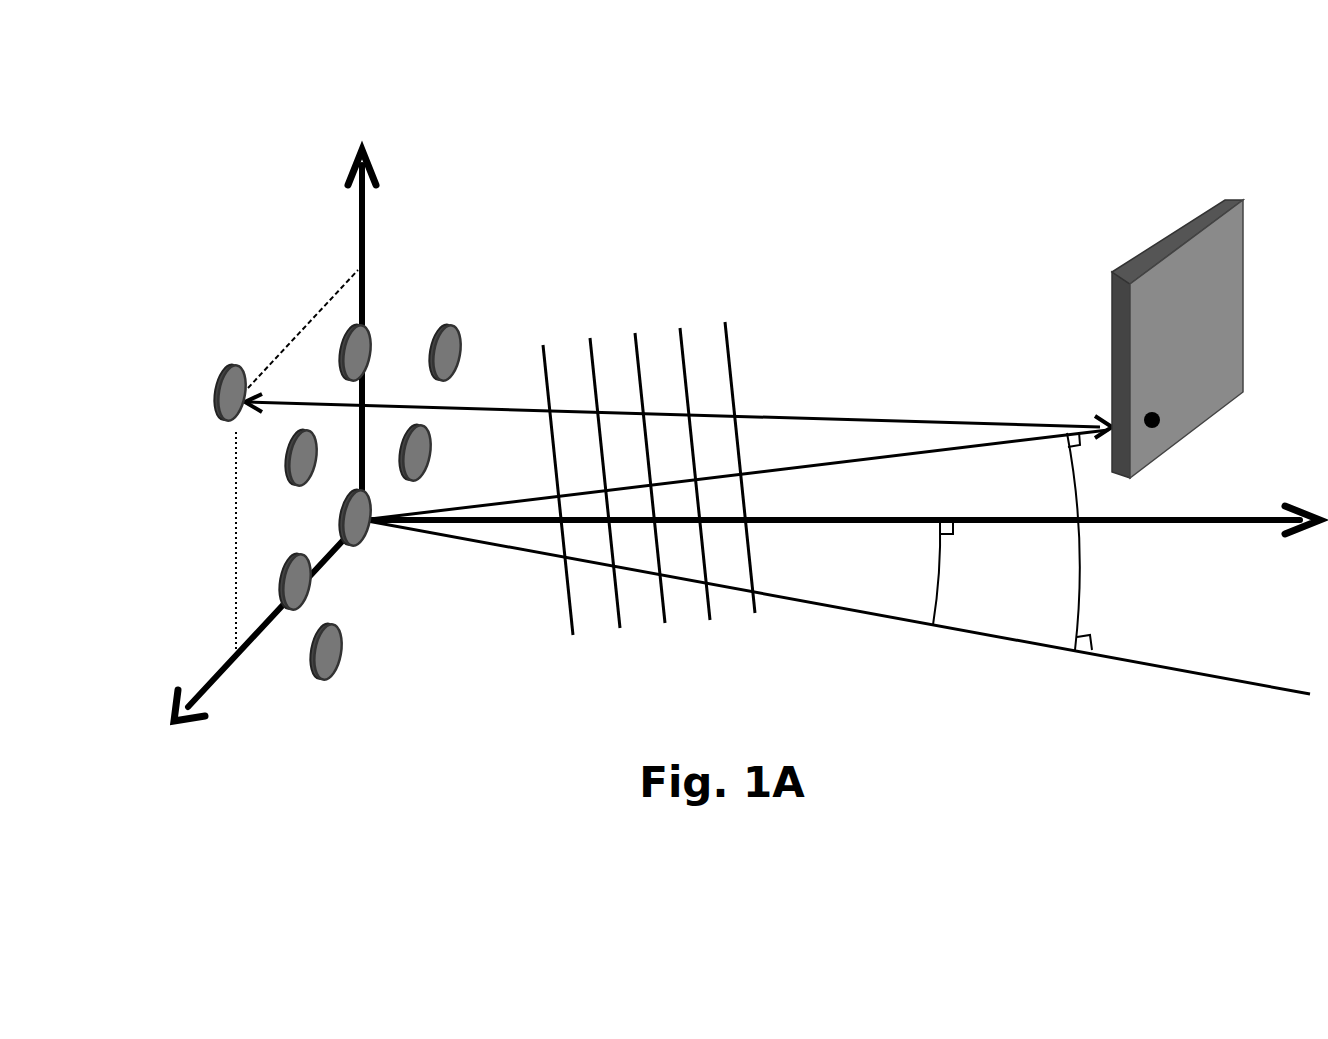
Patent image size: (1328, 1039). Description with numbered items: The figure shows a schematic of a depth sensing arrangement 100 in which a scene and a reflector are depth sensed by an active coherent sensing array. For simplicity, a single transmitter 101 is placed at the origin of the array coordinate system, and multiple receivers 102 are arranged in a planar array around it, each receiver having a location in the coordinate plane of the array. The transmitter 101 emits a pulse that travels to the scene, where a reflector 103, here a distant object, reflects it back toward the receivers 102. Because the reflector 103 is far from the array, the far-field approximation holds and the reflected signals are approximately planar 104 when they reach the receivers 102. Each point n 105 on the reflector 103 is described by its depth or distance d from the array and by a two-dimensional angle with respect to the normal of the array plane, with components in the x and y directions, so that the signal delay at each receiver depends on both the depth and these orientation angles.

The system 100 is at (729, 401).
The transmitter 101 is at (360, 560).
The receivers 102 is at (452, 300).
The reflector 103 is at (1248, 265).
The planar reflected signals 104 is at (627, 320).
The point n in the scene 105 is at (1163, 403).